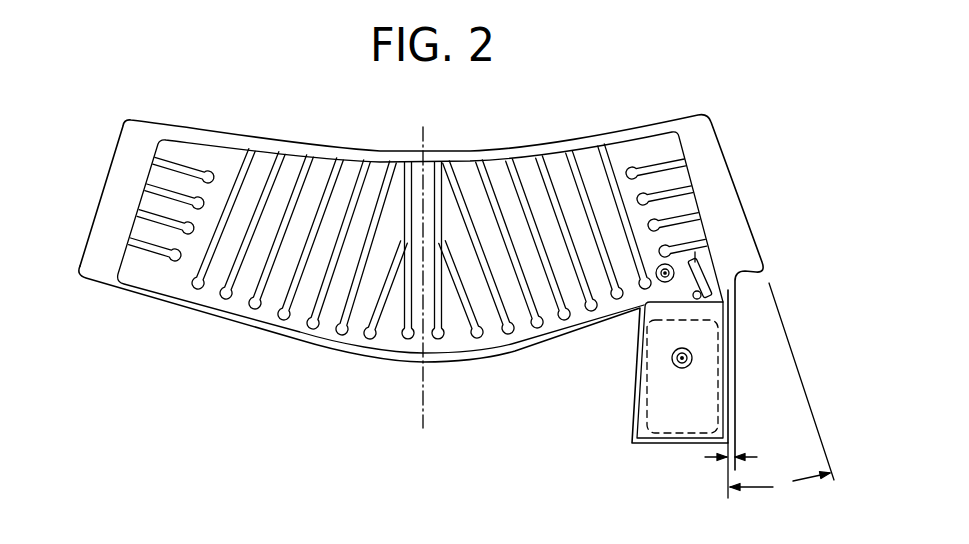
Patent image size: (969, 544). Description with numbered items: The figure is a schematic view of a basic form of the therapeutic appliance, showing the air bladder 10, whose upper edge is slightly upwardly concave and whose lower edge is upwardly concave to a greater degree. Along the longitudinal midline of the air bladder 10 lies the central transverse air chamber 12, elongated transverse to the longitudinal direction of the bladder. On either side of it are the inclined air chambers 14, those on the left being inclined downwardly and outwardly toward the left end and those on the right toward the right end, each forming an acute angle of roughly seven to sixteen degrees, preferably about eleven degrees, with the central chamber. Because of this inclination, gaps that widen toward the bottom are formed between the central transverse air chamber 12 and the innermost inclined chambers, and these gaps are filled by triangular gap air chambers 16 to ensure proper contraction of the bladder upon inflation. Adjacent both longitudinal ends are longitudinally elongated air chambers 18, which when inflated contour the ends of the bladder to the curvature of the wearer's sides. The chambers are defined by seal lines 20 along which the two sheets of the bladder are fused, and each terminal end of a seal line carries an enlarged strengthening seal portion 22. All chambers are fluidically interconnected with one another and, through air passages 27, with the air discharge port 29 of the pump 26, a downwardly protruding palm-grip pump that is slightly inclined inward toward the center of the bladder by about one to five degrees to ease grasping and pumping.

The air bladder 10 is at (230, 375).
The central transverse air chamber 12 is at (420, 177).
The inclined air chambers 14 is at (293, 168).
The gap air chambers 16 is at (392, 322).
The longitudinally elongated air chambers 18 is at (673, 177).
The seal lines 20 is at (527, 150).
The strengthening seal portion 22 is at (466, 330).
The pump 26 is at (703, 395).
The air passages 27 is at (620, 177).
The air discharge port 29 is at (707, 273).